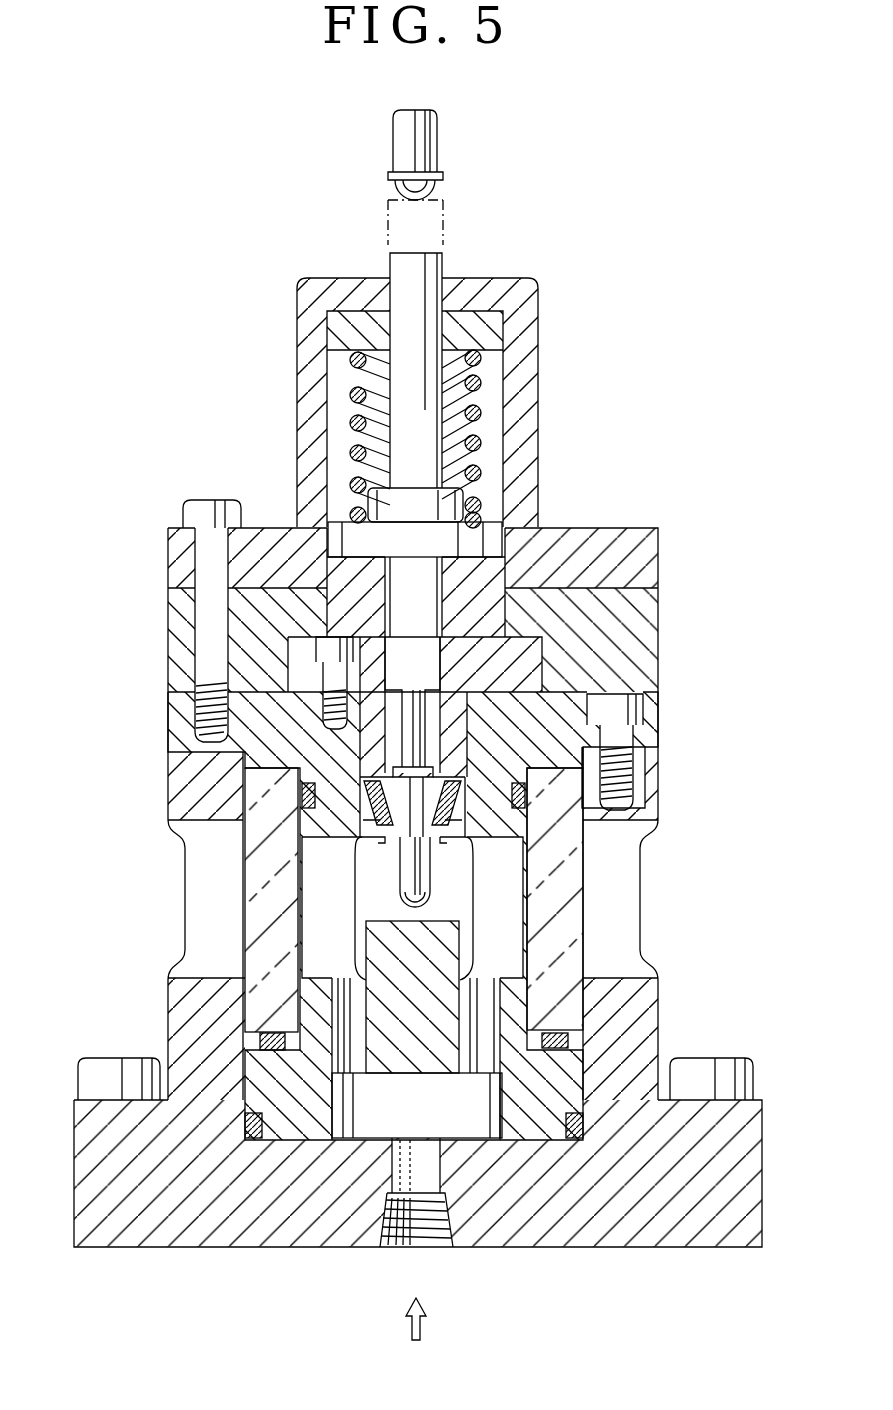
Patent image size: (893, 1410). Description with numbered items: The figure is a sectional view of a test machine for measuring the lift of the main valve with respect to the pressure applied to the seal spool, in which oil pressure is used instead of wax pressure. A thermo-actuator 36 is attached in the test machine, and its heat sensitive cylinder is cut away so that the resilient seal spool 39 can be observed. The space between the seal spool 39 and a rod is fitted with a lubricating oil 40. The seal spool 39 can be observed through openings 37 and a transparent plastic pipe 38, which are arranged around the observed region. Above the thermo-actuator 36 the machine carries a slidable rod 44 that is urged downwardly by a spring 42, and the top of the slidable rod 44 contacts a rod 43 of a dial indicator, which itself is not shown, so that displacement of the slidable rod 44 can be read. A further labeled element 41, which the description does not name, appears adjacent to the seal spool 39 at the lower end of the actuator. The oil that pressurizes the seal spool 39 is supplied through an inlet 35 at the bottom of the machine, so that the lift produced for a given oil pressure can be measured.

The inlet 35 is at (405, 1250).
The thermo-actuator 36 is at (377, 850).
The openings 37 is at (200, 867).
The transparent plastic pipe 38 is at (250, 935).
The resilient seal spool 39 is at (433, 857).
The lubricating oil 40 is at (395, 860).
The valve stem tip 41 is at (430, 893).
The spring 42 is at (490, 408).
The rod of a dial indicator 43 is at (407, 148).
The slidable rod 44 is at (443, 263).